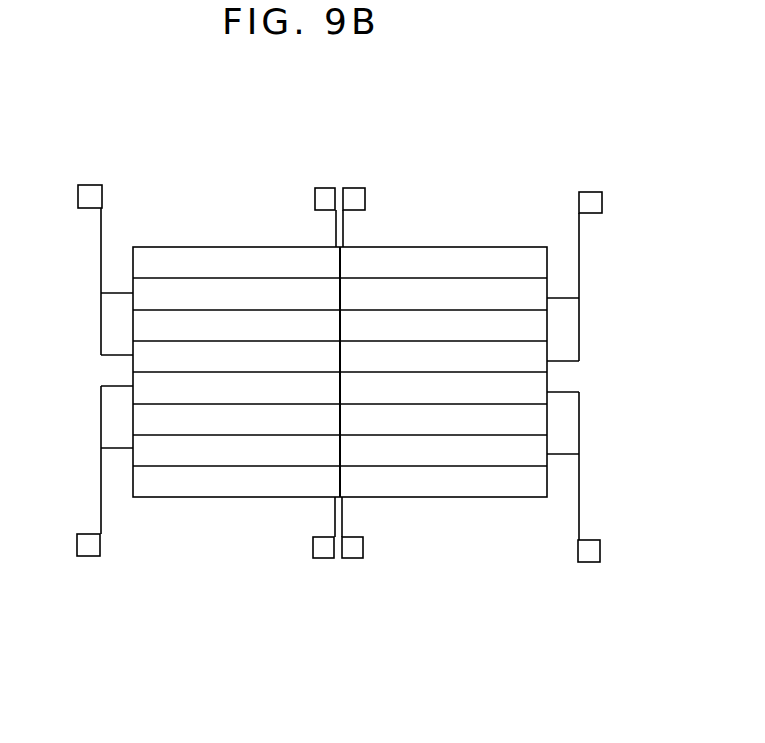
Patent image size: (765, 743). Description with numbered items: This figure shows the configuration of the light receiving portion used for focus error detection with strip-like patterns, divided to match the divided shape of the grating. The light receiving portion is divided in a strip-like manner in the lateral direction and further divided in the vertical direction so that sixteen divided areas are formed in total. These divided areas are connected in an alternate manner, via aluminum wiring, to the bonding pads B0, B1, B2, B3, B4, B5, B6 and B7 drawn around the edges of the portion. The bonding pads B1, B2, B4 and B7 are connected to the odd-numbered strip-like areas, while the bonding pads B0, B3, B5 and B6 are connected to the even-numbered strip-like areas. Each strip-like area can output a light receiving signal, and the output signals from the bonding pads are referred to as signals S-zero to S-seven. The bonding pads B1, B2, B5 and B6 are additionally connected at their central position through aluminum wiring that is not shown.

The bonding pad B0 is at (88, 185).
The bonding pad B1 is at (330, 188).
The bonding pad B2 is at (355, 188).
The bonding pad B3 is at (590, 192).
The bonding pad B4 is at (588, 562).
The bonding pad B5 is at (352, 558).
The bonding pad B6 is at (326, 558).
The bonding pad B7 is at (85, 556).